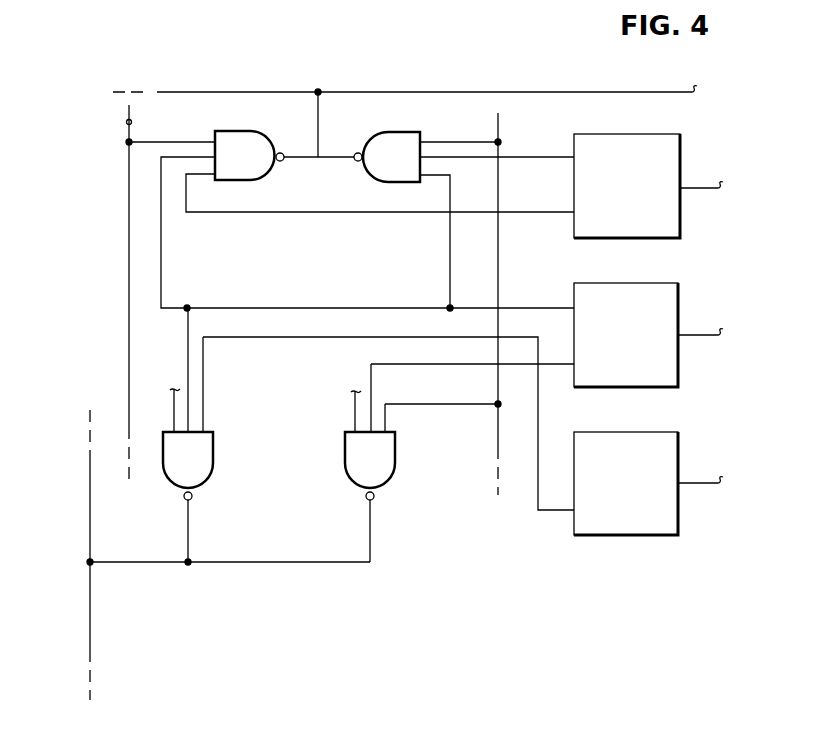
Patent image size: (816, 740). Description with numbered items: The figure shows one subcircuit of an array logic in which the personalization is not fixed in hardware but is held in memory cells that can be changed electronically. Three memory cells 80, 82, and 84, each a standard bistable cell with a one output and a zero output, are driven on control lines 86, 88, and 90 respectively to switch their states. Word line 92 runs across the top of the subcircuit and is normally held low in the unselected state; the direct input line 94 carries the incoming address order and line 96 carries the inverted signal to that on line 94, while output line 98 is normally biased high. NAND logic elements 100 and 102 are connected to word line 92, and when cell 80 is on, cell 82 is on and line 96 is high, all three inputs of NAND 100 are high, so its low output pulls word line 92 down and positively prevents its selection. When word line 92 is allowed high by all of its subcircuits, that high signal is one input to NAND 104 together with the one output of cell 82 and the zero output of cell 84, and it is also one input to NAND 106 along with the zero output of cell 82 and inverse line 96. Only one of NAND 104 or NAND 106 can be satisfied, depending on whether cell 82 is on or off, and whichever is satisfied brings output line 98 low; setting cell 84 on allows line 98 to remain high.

The memory cell 80 is at (641, 135).
The memory cell 82 is at (650, 289).
The memory cell 84 is at (650, 432).
The control line 86 is at (698, 190).
The control line 88 is at (696, 337).
The control line 90 is at (694, 483).
The word line 92 is at (450, 92).
The direct input line 94 is at (126, 122).
The inverted input line 96 is at (499, 130).
The output line 98 is at (90, 514).
The NAND logic element 100 is at (398, 138).
The NAND logic element 102 is at (260, 134).
The NAND 104 is at (206, 476).
The NAND 106 is at (392, 476).